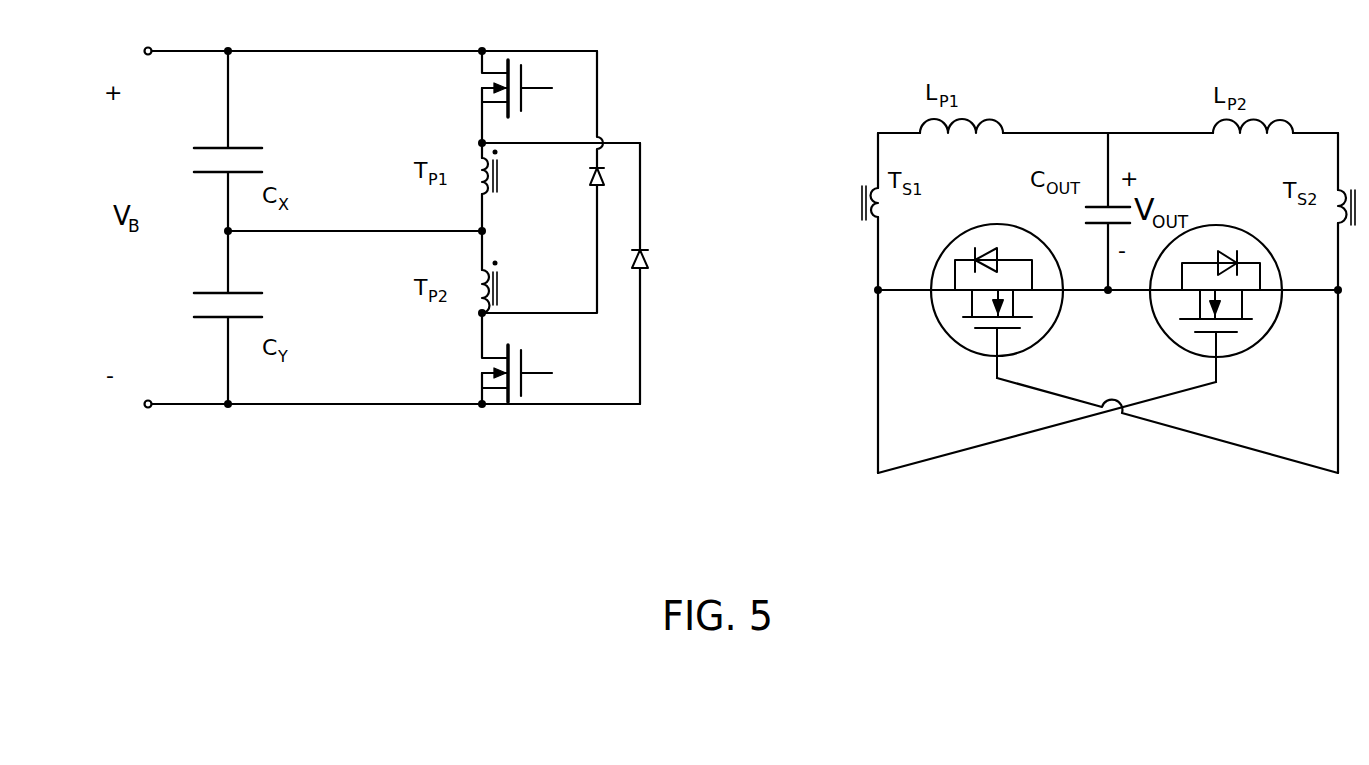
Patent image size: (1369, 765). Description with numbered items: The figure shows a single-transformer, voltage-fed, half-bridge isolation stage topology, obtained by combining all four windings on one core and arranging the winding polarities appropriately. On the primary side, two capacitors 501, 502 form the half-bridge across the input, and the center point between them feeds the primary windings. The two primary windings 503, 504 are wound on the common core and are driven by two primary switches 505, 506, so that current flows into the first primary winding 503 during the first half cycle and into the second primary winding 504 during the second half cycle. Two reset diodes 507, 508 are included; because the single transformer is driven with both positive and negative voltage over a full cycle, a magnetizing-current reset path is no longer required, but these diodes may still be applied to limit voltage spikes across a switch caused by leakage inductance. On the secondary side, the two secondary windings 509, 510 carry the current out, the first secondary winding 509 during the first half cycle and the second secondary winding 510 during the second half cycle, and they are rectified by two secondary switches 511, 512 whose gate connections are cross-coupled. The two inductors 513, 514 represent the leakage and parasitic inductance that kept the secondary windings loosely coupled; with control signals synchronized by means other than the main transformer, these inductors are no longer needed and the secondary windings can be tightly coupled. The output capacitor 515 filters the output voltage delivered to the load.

The capacitor CX 501 is at (208, 147).
The capacitor CY 502 is at (206, 318).
The primary winding TP1 503 is at (480, 177).
The primary winding TP2 504 is at (480, 289).
The primary switch transistor 505 is at (520, 98).
The primary switch transistor 506 is at (522, 366).
The diode 507 is at (647, 266).
The diode 508 is at (592, 188).
The secondary winding TS1 509 is at (884, 205).
The secondary winding TS2 510 is at (1332, 210).
The synchronous rectifier MOSFET 511 is at (958, 346).
The synchronous rectifier MOSFET 512 is at (1248, 352).
The output inductor LP1 513 is at (998, 121).
The output inductor LP2 514 is at (1294, 122).
The output capacitor COUT 515 is at (1106, 226).